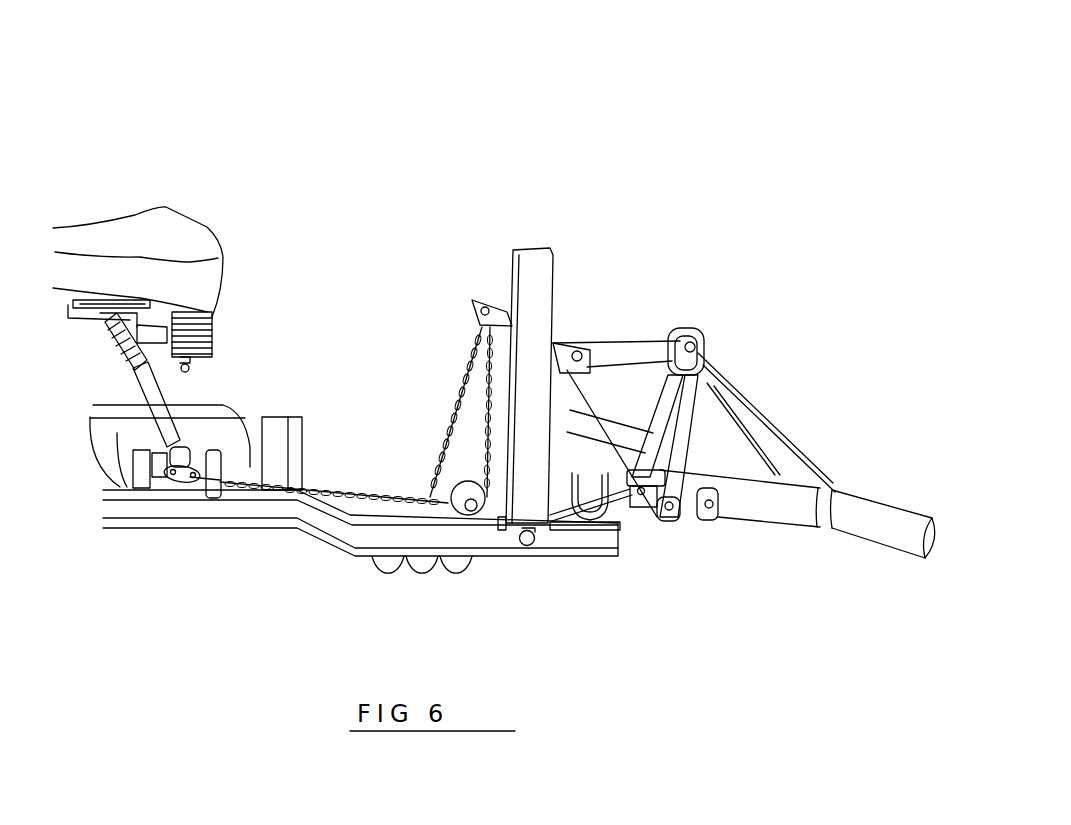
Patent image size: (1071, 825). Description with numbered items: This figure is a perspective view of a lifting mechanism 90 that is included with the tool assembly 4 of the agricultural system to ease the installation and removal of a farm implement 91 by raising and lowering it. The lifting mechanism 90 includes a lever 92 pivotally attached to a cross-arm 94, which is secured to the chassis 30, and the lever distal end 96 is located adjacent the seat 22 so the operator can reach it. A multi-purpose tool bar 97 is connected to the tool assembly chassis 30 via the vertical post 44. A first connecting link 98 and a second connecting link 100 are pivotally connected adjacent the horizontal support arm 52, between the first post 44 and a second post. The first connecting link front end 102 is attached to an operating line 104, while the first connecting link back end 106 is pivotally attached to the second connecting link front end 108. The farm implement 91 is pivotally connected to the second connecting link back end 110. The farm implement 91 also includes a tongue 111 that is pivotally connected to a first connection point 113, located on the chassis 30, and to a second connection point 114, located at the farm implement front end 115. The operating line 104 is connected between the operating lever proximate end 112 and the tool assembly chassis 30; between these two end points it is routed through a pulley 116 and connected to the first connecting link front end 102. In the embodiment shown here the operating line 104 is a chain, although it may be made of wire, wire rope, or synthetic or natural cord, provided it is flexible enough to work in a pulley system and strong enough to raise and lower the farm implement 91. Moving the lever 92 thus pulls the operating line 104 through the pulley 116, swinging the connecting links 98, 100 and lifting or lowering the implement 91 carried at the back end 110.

The tool assembly 4 is at (338, 578).
The seat 22 is at (147, 232).
The chassis 30 is at (163, 507).
The vertical post 44 is at (533, 503).
The horizontal support arm 52 is at (657, 500).
The lifting mechanism 90 is at (830, 127).
The farm implement 91 is at (888, 533).
The lever 92 is at (163, 400).
The cross-arm 94 is at (207, 452).
The lever distal end 96 is at (132, 315).
The multi-purpose tool bar 97 is at (770, 183).
The first connecting link 98 is at (505, 250).
The second connecting link 100 is at (627, 345).
The first connecting link front end 102 is at (475, 295).
The operating line 104 is at (478, 295).
The first connecting link back end 106 is at (598, 342).
The second connecting link front end 108 is at (563, 342).
The second connecting link back end 110 is at (693, 330).
The tongue 111 is at (648, 503).
The operating lever proximate end 112 is at (190, 450).
The first connection point 113 is at (527, 546).
The second connection point 114 is at (733, 523).
The farm implement front end 115 is at (760, 470).
The pulley 116 is at (435, 455).